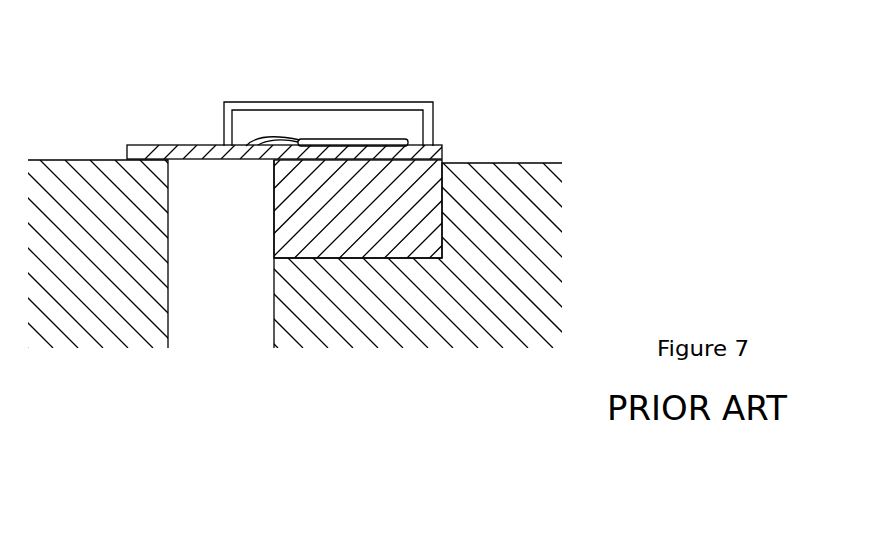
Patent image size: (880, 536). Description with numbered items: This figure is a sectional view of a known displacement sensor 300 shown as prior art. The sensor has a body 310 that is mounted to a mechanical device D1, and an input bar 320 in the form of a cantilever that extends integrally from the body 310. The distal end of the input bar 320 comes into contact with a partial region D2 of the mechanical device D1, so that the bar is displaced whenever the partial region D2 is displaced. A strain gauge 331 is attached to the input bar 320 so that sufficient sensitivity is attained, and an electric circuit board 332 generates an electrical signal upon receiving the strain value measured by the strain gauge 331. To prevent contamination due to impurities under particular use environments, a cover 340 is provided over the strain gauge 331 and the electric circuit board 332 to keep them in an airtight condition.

The displacement sensor 300 is at (338, 140).
The body 310 is at (284, 218).
The input bar 320 is at (167, 153).
The strain gauge 331 is at (268, 131).
The electric circuit board 332 is at (364, 140).
The cover 340 is at (315, 108).
The mechanical device D1 is at (503, 167).
The partial region D2 is at (87, 170).